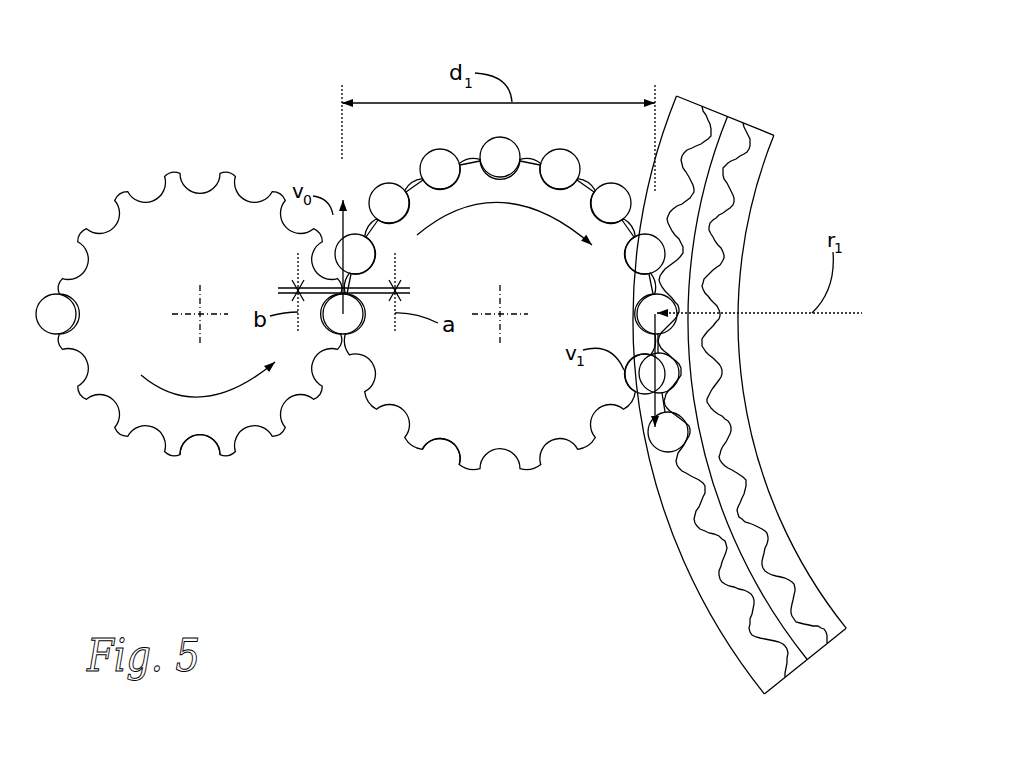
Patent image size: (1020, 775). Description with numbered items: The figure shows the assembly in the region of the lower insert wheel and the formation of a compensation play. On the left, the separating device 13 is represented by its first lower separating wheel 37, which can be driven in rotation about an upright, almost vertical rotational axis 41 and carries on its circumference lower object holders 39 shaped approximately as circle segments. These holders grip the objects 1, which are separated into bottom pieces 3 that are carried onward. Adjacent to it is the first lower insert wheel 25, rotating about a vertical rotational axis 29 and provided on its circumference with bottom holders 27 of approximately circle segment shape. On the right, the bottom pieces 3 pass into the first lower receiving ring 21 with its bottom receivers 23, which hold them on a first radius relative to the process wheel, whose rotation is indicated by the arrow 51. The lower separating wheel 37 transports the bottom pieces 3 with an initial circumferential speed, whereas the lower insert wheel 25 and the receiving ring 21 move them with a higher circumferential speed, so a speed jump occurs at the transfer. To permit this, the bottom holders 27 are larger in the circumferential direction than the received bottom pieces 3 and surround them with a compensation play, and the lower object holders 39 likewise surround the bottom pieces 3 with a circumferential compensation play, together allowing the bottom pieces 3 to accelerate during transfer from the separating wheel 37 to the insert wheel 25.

The object 1 is at (55, 308).
The bottom piece 3 is at (356, 250).
The separating device 13 is at (135, 155).
The first lower receiving ring 21 is at (695, 458).
The bottom receiver 23 is at (690, 432).
The first lower insert wheel 25 is at (498, 400).
The bottom holder 27 is at (442, 448).
The vertical rotational axis 29 is at (503, 306).
The first lower separating wheel 37 is at (180, 250).
The lower object holder 39 is at (200, 447).
The rotational axis 41 is at (203, 303).
The arrow 51 is at (739, 395).